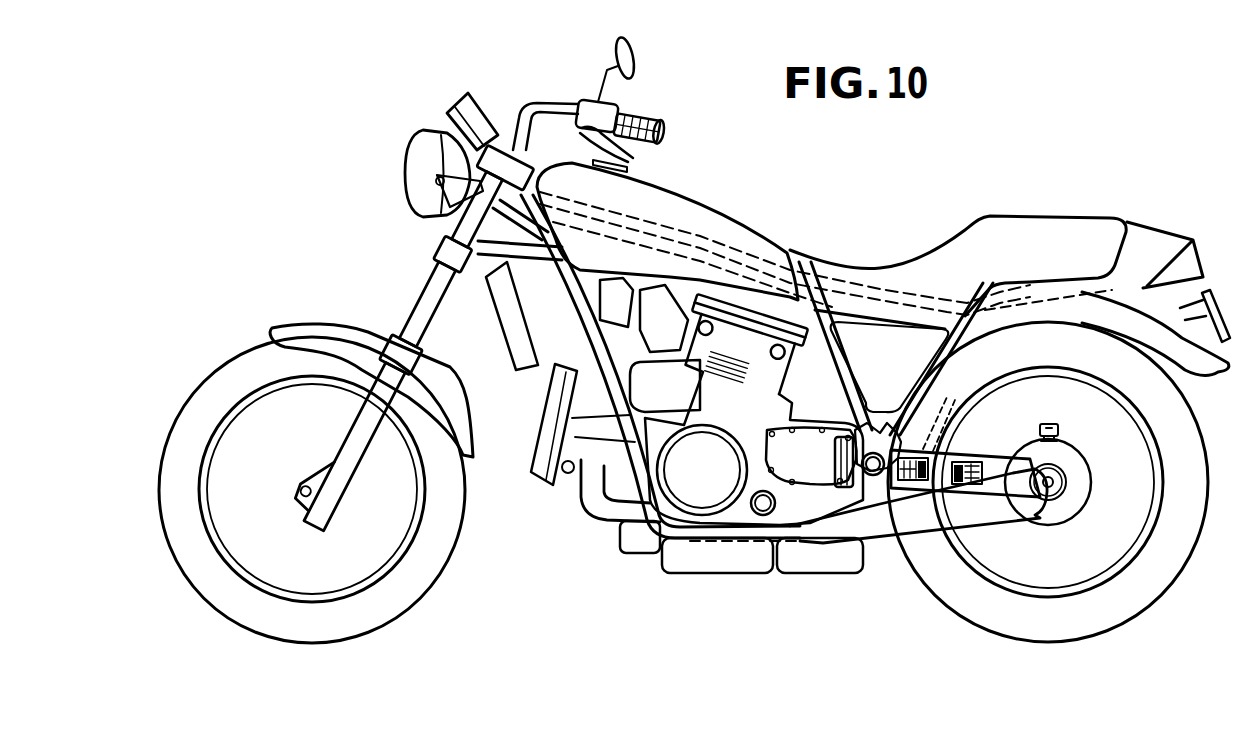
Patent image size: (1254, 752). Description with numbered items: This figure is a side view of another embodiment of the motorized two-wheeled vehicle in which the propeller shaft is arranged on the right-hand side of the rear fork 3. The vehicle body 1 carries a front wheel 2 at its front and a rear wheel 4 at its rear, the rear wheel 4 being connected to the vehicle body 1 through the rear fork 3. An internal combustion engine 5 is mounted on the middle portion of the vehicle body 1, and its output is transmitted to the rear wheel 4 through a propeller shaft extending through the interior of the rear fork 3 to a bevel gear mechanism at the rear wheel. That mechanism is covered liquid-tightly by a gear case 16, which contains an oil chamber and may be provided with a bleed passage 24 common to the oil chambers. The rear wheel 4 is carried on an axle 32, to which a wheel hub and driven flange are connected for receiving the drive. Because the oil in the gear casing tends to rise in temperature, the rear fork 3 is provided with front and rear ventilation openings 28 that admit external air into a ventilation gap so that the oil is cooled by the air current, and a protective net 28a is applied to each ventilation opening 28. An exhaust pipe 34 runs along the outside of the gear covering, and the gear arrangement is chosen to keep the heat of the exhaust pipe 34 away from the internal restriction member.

The vehicle body 1 is at (740, 195).
The front wheel 2 is at (412, 590).
The rear fork 3 is at (980, 452).
The rear wheel 4 is at (987, 610).
The internal combustion engine 5 is at (753, 320).
The gear case 16 is at (1077, 493).
The bleed passage 24 is at (1062, 415).
The ventilation opening 28 is at (949, 401).
The protective net 28a is at (960, 487).
The axle 32 is at (1050, 490).
The exhaust pipe 34 is at (960, 510).